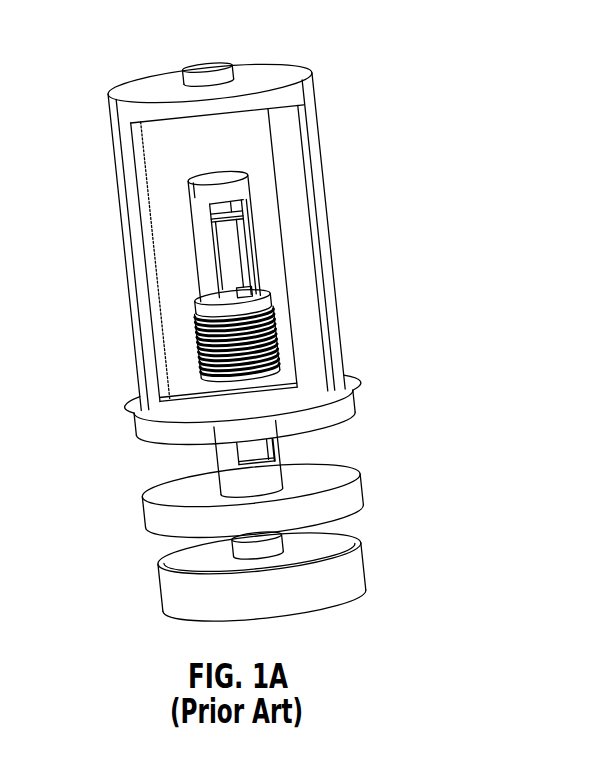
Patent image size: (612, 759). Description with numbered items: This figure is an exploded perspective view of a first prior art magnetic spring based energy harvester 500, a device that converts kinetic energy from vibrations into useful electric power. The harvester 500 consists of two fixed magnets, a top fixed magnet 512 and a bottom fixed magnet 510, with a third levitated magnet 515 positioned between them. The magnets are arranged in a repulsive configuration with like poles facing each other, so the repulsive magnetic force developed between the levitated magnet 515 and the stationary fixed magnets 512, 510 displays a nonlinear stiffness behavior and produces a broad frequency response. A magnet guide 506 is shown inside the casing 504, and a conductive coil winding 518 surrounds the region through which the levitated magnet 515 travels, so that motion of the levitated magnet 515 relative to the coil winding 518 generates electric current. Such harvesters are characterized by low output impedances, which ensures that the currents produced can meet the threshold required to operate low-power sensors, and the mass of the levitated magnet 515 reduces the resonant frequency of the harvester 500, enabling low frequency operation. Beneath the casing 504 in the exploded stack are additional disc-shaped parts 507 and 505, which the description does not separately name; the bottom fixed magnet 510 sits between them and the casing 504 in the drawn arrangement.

The magnetic spring based energy harvester 500 is at (365, 119).
The casing 504 is at (332, 288).
The base disc 505 is at (350, 580).
The magnet guide 506 is at (257, 250).
The disc 507 is at (160, 523).
The bottom fixed magnet 510 is at (265, 550).
The top fixed magnet 512 is at (204, 62).
The levitated magnet 515 is at (230, 253).
The conductive coil winding 518 is at (205, 350).